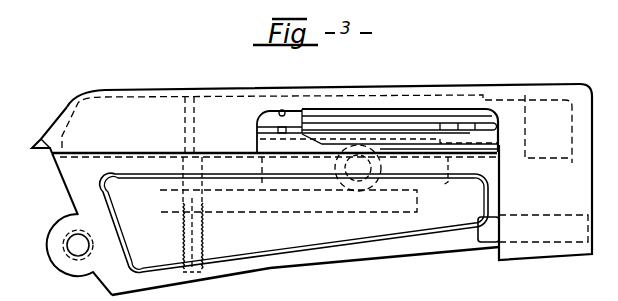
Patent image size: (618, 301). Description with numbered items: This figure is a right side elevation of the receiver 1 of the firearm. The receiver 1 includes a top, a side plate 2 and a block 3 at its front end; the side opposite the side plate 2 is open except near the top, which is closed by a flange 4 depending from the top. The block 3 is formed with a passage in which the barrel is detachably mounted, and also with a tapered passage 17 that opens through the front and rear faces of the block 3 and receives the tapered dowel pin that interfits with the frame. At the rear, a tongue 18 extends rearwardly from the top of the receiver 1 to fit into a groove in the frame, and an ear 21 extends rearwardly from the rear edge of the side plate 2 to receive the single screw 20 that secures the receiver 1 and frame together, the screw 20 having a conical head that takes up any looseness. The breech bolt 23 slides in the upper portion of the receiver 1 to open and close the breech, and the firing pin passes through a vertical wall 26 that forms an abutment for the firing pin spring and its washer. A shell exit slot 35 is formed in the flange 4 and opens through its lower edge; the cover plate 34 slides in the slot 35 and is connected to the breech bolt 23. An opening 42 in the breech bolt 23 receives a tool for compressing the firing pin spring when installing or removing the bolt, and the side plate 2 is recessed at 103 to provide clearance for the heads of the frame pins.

The receiver 1 is at (162, 95).
The side plate 2 is at (350, 253).
The block 3 is at (562, 188).
The flange 4 is at (250, 140).
The passage 17 is at (492, 232).
The tongue 18 is at (43, 150).
The screw 20 is at (198, 240).
The ear 21 is at (57, 258).
The breech bolt 23 is at (283, 203).
The vertical wall 26 is at (185, 125).
The cover plate 34 is at (425, 190).
The shell exit slot 35 is at (281, 110).
The opening 42 is at (182, 198).
The recess 103 is at (367, 227).